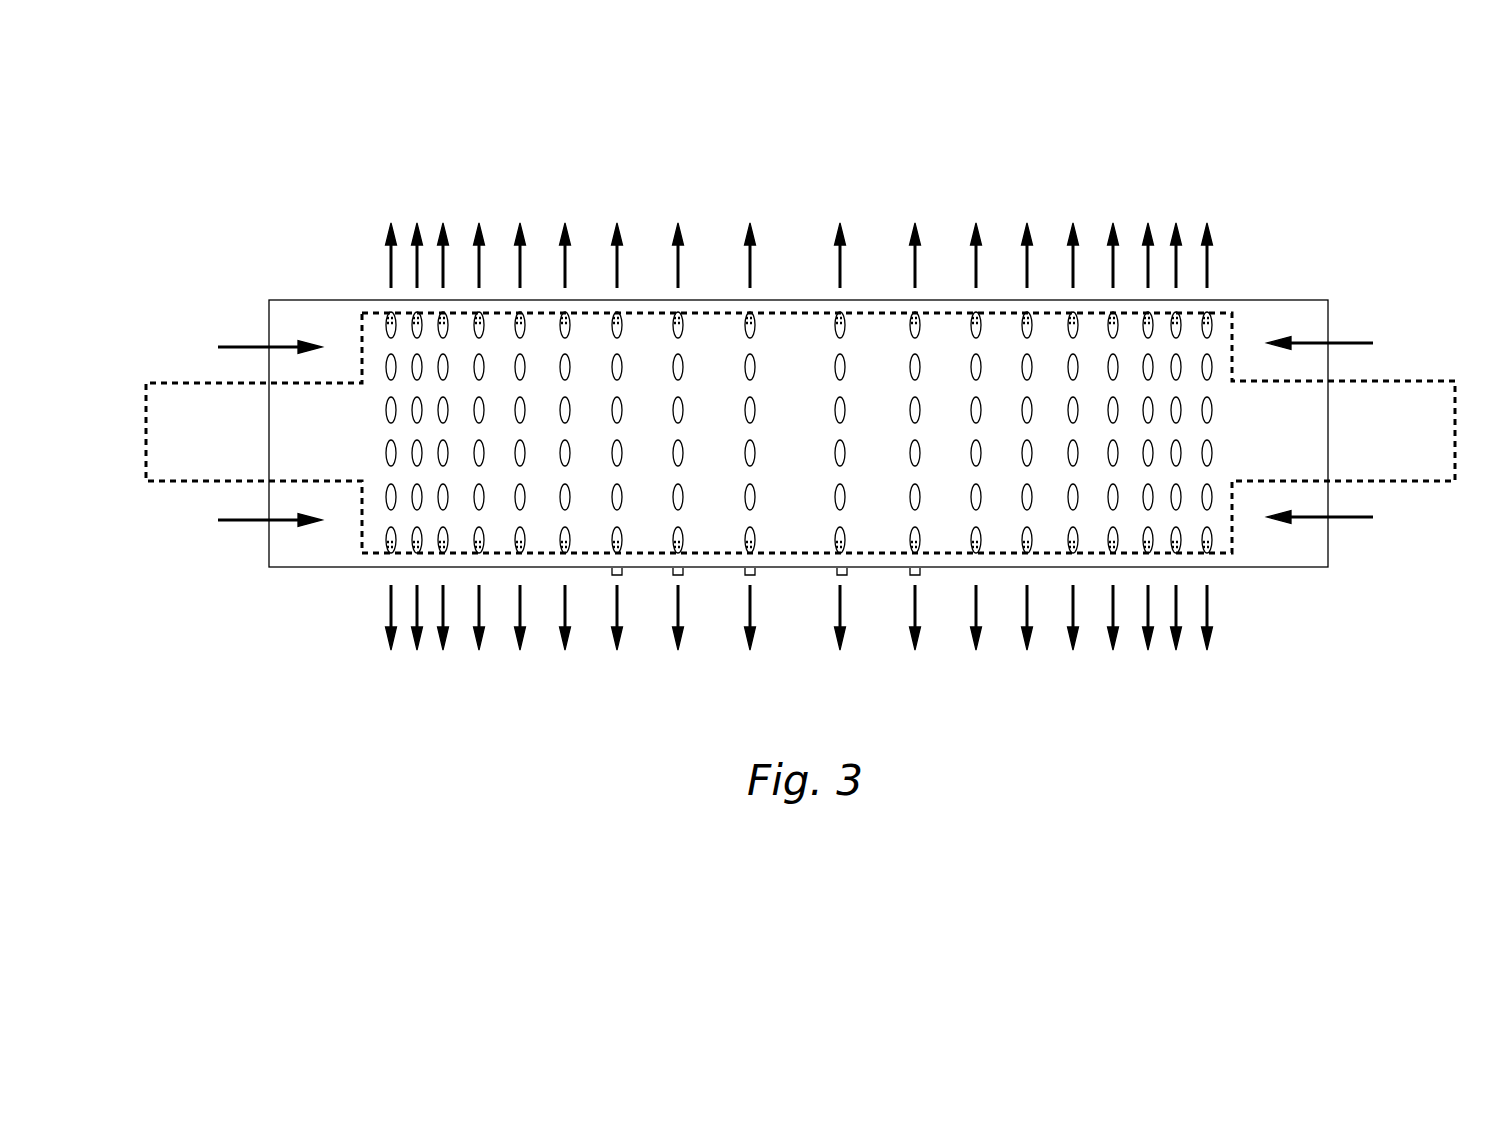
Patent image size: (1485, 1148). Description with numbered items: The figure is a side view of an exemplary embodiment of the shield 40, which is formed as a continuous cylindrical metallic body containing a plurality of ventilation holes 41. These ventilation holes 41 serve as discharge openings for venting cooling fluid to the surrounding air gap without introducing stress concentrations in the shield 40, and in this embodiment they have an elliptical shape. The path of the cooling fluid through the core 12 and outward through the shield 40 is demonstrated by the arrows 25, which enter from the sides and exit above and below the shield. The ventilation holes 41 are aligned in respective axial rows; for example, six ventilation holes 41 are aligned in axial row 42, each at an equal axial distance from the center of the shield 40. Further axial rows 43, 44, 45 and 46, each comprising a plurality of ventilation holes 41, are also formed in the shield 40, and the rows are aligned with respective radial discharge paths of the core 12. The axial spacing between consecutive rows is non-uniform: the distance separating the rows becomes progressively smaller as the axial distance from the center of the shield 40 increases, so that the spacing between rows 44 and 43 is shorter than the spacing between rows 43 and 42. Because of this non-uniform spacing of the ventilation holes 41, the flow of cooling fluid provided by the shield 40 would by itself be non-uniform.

The core 12 is at (202, 468).
The arrows 25 is at (388, 260).
The shield 40 is at (323, 550).
The ventilation holes 41 is at (912, 530).
The axial row 42 is at (755, 574).
The axial row 43 is at (683, 574).
The axial row 44 is at (622, 574).
The axial row 45 is at (847, 574).
The axial row 46 is at (920, 574).